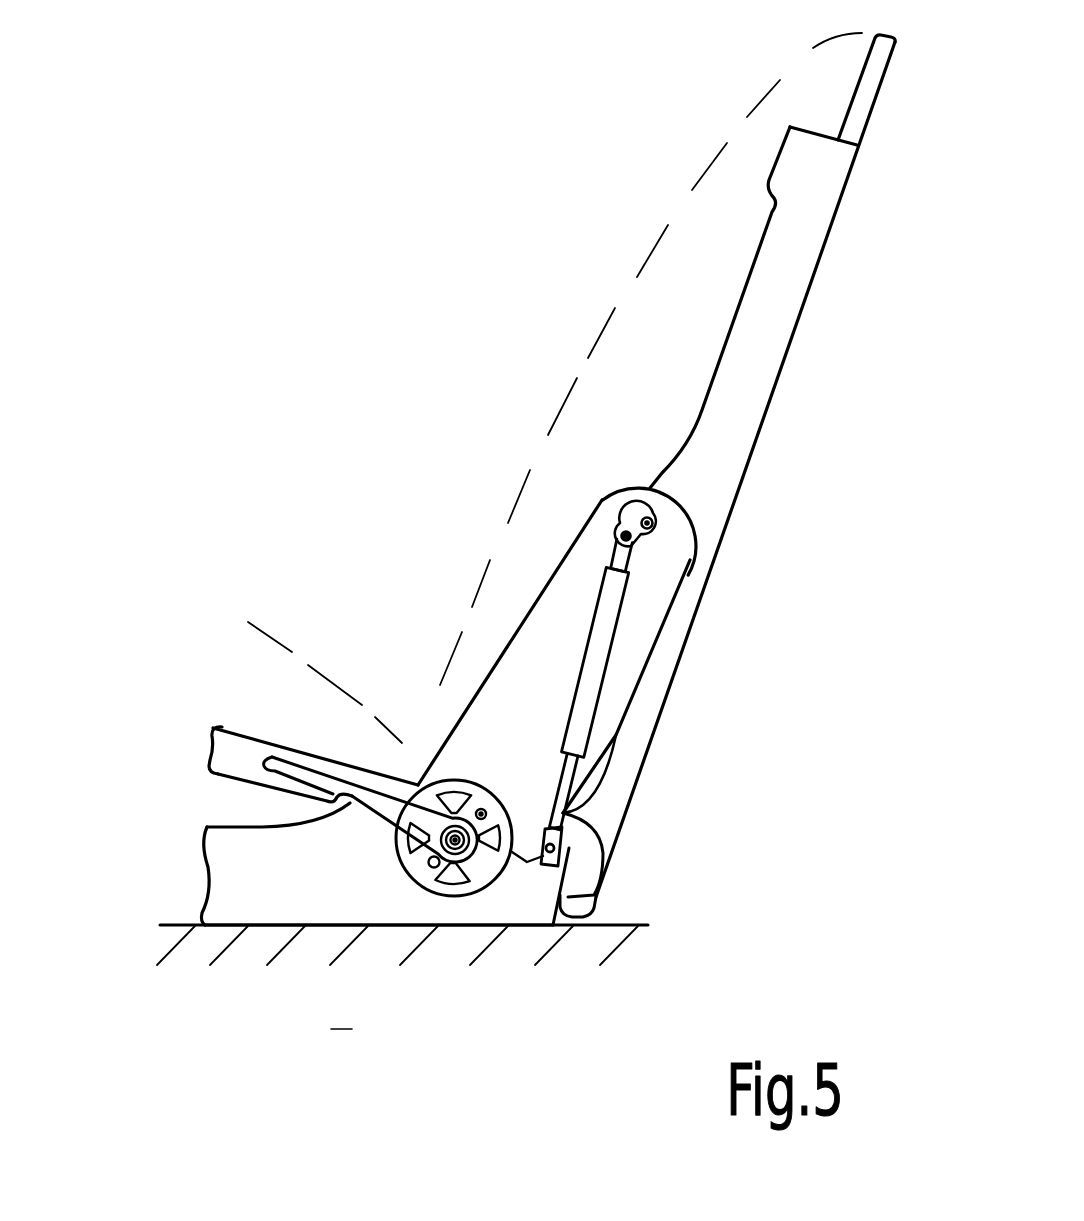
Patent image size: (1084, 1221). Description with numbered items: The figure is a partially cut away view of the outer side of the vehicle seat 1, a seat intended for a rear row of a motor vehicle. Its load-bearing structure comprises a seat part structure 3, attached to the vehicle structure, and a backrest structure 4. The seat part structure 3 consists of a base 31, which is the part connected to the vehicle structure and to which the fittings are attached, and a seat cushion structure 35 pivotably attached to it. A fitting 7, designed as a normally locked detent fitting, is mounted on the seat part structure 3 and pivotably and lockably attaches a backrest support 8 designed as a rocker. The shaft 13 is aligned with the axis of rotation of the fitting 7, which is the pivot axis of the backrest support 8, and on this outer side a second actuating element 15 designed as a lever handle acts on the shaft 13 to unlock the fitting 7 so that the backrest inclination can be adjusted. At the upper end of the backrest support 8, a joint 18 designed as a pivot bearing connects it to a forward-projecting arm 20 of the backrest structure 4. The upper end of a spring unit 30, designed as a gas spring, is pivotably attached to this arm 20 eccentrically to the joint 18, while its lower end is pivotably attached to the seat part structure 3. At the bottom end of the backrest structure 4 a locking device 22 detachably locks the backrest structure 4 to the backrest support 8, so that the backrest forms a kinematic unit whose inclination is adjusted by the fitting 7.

The vehicle seat 1 is at (457, 333).
The seat part structure 3 is at (259, 824).
The backrest structure 4 is at (738, 432).
The fitting 7 is at (435, 870).
The backrest support 8 is at (530, 703).
The shaft 13 is at (470, 850).
The second actuating element 15 is at (323, 790).
The joint 18 is at (660, 537).
The arm 20 is at (636, 515).
The locking device 22 is at (578, 868).
The spring unit 30 is at (588, 678).
The base 31 is at (310, 880).
The seat cushion structure 35 is at (230, 748).